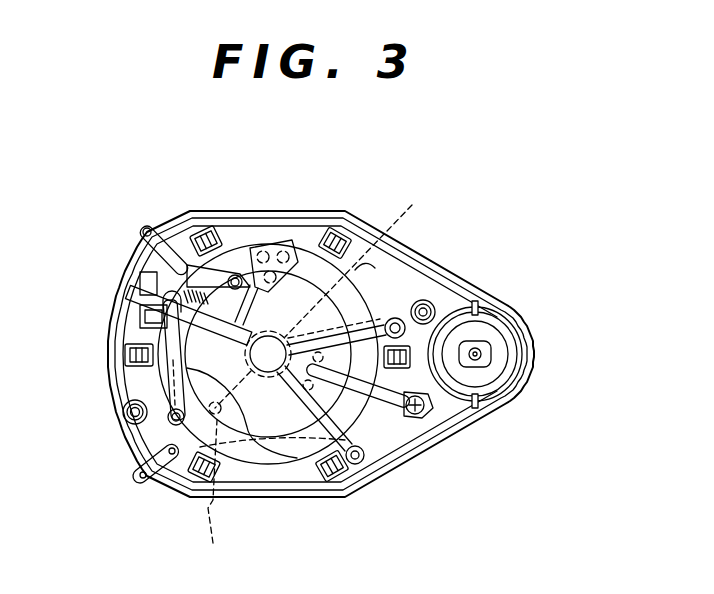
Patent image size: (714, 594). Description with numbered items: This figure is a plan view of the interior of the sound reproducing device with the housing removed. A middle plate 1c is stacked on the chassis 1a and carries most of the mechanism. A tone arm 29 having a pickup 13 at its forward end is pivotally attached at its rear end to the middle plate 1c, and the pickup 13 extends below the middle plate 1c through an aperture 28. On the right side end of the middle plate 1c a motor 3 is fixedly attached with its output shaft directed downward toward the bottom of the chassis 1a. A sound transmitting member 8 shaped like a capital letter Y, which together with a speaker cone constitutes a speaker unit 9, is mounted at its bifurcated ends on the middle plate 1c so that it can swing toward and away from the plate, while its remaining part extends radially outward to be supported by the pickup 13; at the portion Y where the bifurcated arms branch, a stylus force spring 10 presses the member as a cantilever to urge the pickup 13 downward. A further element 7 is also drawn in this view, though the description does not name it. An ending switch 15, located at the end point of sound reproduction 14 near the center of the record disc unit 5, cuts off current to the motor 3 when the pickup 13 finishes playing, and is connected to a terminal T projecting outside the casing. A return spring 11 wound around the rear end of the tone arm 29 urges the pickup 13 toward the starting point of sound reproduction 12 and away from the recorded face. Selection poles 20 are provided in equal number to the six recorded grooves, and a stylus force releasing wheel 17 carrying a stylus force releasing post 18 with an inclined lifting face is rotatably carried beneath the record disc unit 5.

The chassis 1a is at (359, 354).
The middle plate 1c is at (310, 347).
The motor 3 is at (476, 332).
The record disc unit 5 is at (202, 219).
The bracket 7 is at (378, 220).
The sound transmitting member 8 is at (109, 293).
The speaker unit 9 is at (282, 565).
The stylus force spring 10 is at (373, 399).
The return spring 11 is at (213, 493).
The starting point of sound reproduction 12 is at (134, 222).
The pickup 13 is at (174, 220).
The end point of sound reproduction 14 is at (278, 238).
The ending switch 15 is at (272, 217).
The stylus force releasing wheel 17 is at (139, 315).
The stylus force releasing post 18 is at (126, 266).
The selection poles 20 is at (279, 358).
The aperture 28 is at (115, 362).
The tone arm 29 is at (272, 484).
The terminal T is at (118, 326).
The portion where the bifurcated arms branch outward Y is at (321, 297).